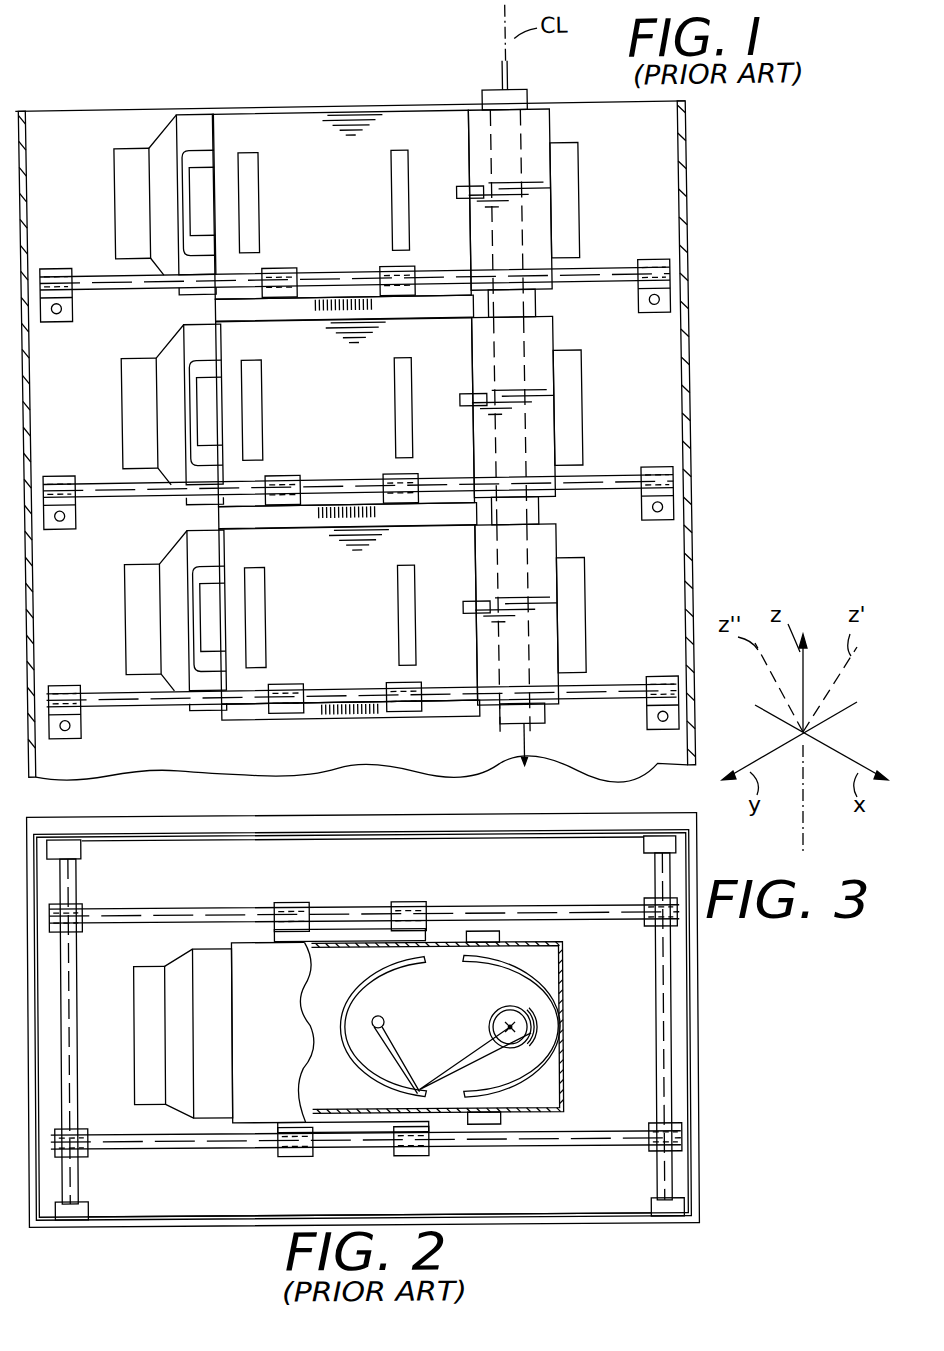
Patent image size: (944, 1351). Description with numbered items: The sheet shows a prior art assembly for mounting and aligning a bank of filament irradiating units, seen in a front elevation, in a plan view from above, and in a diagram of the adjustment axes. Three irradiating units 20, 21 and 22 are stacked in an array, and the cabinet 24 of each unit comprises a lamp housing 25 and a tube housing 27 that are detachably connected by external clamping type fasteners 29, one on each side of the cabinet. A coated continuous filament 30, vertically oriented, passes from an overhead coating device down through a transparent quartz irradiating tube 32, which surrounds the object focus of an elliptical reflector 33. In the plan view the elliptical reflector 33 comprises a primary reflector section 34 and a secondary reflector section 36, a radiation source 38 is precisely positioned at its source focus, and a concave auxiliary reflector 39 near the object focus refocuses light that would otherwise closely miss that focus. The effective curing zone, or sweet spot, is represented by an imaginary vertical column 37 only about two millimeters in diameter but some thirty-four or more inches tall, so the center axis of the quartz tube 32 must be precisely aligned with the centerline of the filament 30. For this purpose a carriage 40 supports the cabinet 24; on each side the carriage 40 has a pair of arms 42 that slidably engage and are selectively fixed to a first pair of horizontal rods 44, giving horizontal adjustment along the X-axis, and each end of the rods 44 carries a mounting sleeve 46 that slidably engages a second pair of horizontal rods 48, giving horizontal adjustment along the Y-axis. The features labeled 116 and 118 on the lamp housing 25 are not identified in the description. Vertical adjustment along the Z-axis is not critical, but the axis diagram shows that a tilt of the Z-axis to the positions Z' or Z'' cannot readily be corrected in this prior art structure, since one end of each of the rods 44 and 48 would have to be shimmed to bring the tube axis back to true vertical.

In FIG. 1, the irradiating unit 20 is at (378, 177).
In FIG. 1, the irradiating unit 21 is at (352, 410).
In FIG. 1, the irradiating unit 22 is at (355, 634).
In FIG. 1, the cabinet 24 is at (204, 106).
In FIG. 1, the lamp housing 25 is at (256, 134).
In FIG. 1, the tube housing 27 is at (474, 136).
In FIG. 1, the clamping type fastener 29 is at (468, 190).
In FIG. 2, the clamping type fastener 29 is at (503, 936).
In FIG. 1, the coated continuous filament 30 is at (505, 66).
In FIG. 2, the coated continuous filament 30 is at (520, 1015).
In FIG. 1, the quartz irradiating tube 32 is at (526, 146).
In FIG. 2, the quartz irradiating tube 32 is at (487, 1028).
In FIG. 2, the elliptical reflector 33 is at (326, 997).
In FIG. 2, the primary reflector section 34 is at (355, 1060).
In FIG. 2, the secondary reflector section 36 is at (530, 1060).
In FIG. 2, the imaginary vertical column 37 is at (492, 1020).
In FIG. 2, the radiation source 38 is at (377, 1012).
In FIG. 2, the auxiliary reflector 39 is at (533, 1038).
In FIG. 1, the carriage 40 is at (265, 312).
In FIG. 2, the carriage 40 is at (433, 1132).
In FIG. 1, the arm 42 is at (283, 272).
In FIG. 2, the arm 42 is at (288, 900).
In FIG. 1, the first horizontal rod 44 is at (447, 280).
In FIG. 2, the first horizontal rod 44 is at (490, 905).
In FIG. 1, the mounting sleeve 46 is at (63, 328).
In FIG. 2, the mounting sleeve 46 is at (84, 902).
In FIG. 1, the second horizontal rod 48 is at (62, 312).
In FIG. 2, the second horizontal rod 48 is at (78, 953).
In FIG. 1, the slot 116 is at (283, 183).
In FIG. 1, the slot 118 is at (392, 192).